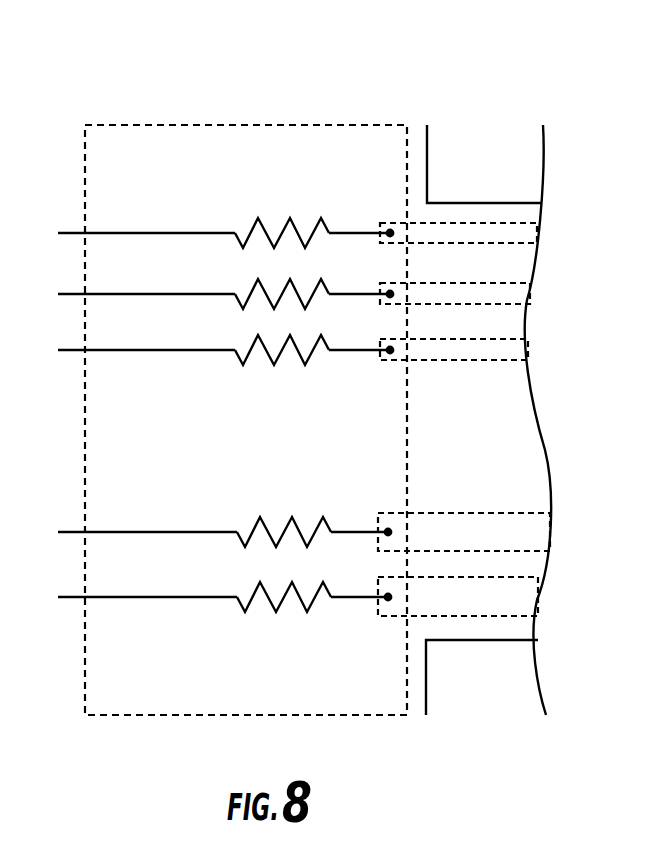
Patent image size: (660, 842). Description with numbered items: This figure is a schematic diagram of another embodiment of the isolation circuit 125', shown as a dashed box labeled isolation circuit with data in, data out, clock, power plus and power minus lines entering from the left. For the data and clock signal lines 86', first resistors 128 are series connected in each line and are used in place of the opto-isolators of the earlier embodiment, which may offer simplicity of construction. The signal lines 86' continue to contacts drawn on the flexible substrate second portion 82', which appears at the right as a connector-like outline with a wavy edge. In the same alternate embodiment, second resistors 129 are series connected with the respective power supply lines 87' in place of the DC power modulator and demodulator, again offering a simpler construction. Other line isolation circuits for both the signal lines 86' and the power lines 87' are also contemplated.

The isolation circuit 125' is at (267, 388).
The first resistors 128 is at (327, 279).
The second resistors 129 is at (322, 542).
The flexible substrate second portion 82' is at (535, 420).
The data and clock signal lines 86' is at (519, 281).
The power supply lines 87' is at (464, 643).